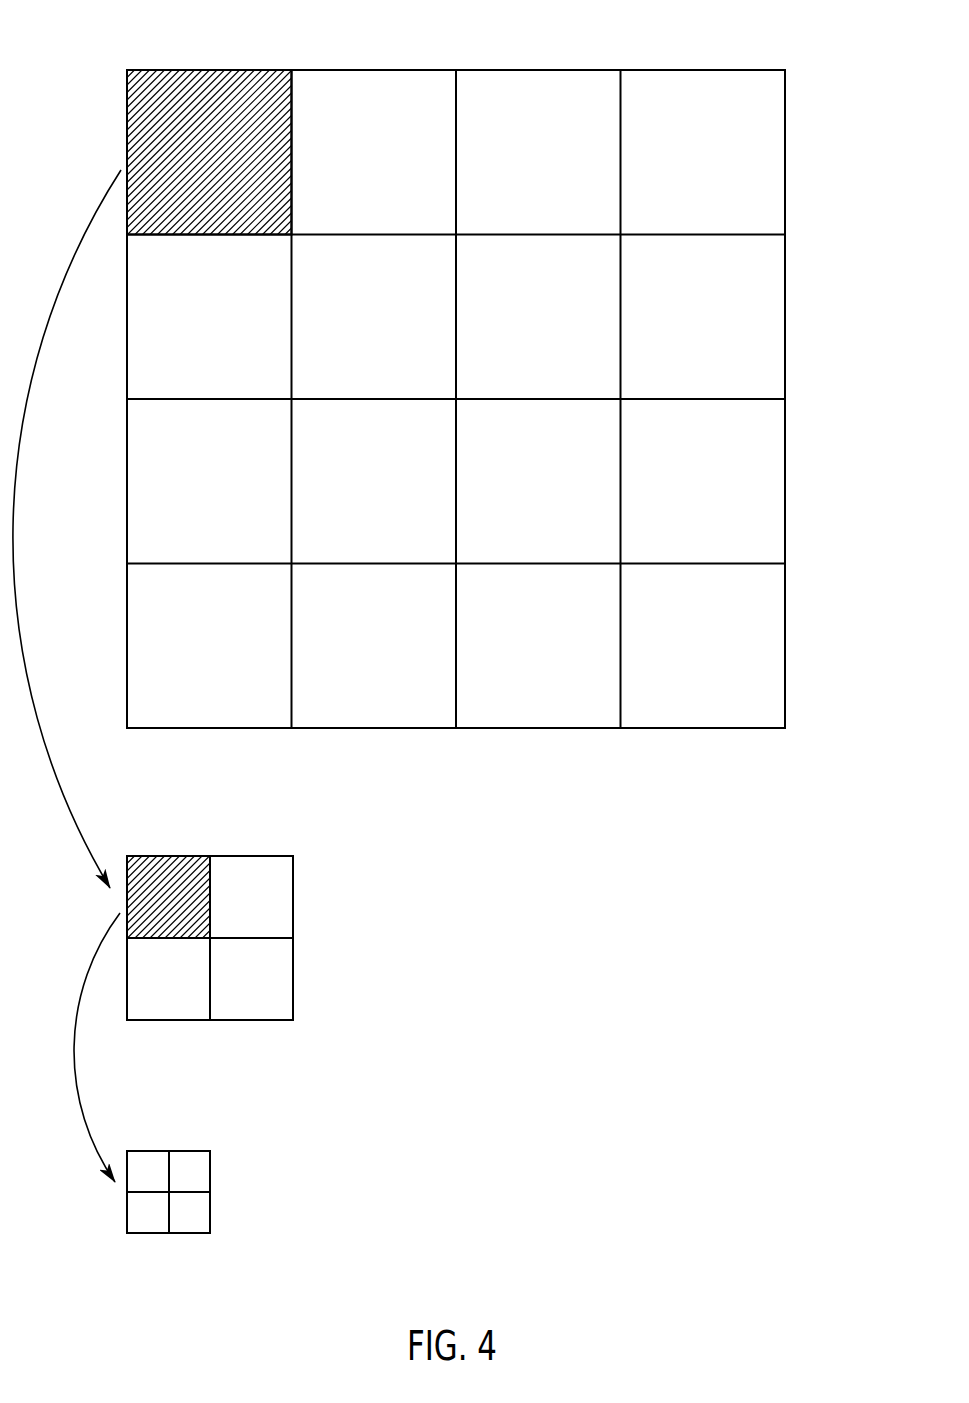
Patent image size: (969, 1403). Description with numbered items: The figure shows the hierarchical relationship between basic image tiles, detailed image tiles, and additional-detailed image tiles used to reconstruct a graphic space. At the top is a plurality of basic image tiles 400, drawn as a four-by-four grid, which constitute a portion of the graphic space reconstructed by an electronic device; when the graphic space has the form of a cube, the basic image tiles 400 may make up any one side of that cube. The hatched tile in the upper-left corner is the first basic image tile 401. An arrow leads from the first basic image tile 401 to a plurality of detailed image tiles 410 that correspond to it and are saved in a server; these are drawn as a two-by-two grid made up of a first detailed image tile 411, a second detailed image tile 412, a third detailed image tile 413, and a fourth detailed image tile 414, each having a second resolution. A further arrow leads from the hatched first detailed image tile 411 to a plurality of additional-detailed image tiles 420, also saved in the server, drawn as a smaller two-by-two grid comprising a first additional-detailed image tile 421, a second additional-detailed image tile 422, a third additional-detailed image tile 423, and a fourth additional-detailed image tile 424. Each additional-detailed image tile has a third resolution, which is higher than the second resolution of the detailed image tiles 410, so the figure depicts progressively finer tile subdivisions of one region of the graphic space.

The basic image tiles 400 is at (802, 78).
The first basic image tile 401 is at (208, 78).
The detailed image tiles 410 is at (310, 865).
The first detailed image tile 411 is at (168, 865).
The second detailed image tile 412 is at (252, 865).
The third detailed image tile 413 is at (175, 1012).
The fourth detailed image tile 414 is at (259, 1012).
The additional-detailed image tiles 420 is at (227, 1158).
The first additional-detailed image tile 421 is at (142, 1160).
The second additional-detailed image tile 422 is at (190, 1160).
The third additional-detailed image tile 423 is at (148, 1223).
The fourth additional-detailed image tile 424 is at (197, 1223).